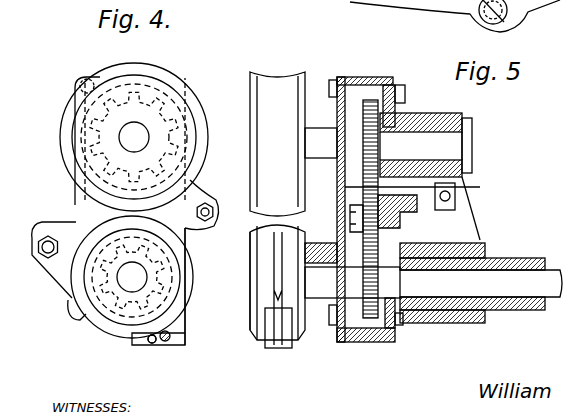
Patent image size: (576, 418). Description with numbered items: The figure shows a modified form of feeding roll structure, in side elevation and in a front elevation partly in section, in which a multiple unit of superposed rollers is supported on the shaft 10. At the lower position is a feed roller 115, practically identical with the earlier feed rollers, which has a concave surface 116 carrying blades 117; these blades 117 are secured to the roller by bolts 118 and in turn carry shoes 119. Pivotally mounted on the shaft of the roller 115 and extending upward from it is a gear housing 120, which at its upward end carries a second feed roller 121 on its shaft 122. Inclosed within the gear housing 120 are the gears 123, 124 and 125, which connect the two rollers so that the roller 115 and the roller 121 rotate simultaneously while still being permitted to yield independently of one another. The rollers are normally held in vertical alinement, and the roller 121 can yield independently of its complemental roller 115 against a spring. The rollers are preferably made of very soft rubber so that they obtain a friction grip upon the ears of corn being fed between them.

In FIG. 4, the shaft 10 is at (128, 287).
In FIG. 4, the feed roller 115 is at (192, 271).
In FIG. 5, the feed roller 115 is at (251, 280).
In FIG. 5, the concave surface 116 is at (267, 300).
In FIG. 4, the blade 117 is at (186, 317).
In FIG. 5, the blade 117 is at (277, 293).
In FIG. 4, the bolt 118 is at (48, 253).
In FIG. 5, the bolt 118 is at (318, 246).
In FIG. 4, the shoe 119 is at (160, 345).
In FIG. 5, the shoe 119 is at (269, 342).
In FIG. 4, the gear housing 120 is at (76, 192).
In FIG. 5, the gear housing 120 is at (367, 209).
In FIG. 4, the feed roller 121 is at (64, 118).
In FIG. 5, the feed roller 121 is at (258, 109).
In FIG. 4, the shaft 122 is at (126, 128).
In FIG. 5, the shaft 122 is at (420, 140).
In FIG. 4, the gear 123 is at (178, 250).
In FIG. 5, the gear 123 is at (392, 330).
In FIG. 4, the gear 124 is at (193, 188).
In FIG. 5, the gear 124 is at (458, 188).
In FIG. 4, the gear 125 is at (99, 146).
In FIG. 5, the gear 125 is at (378, 100).